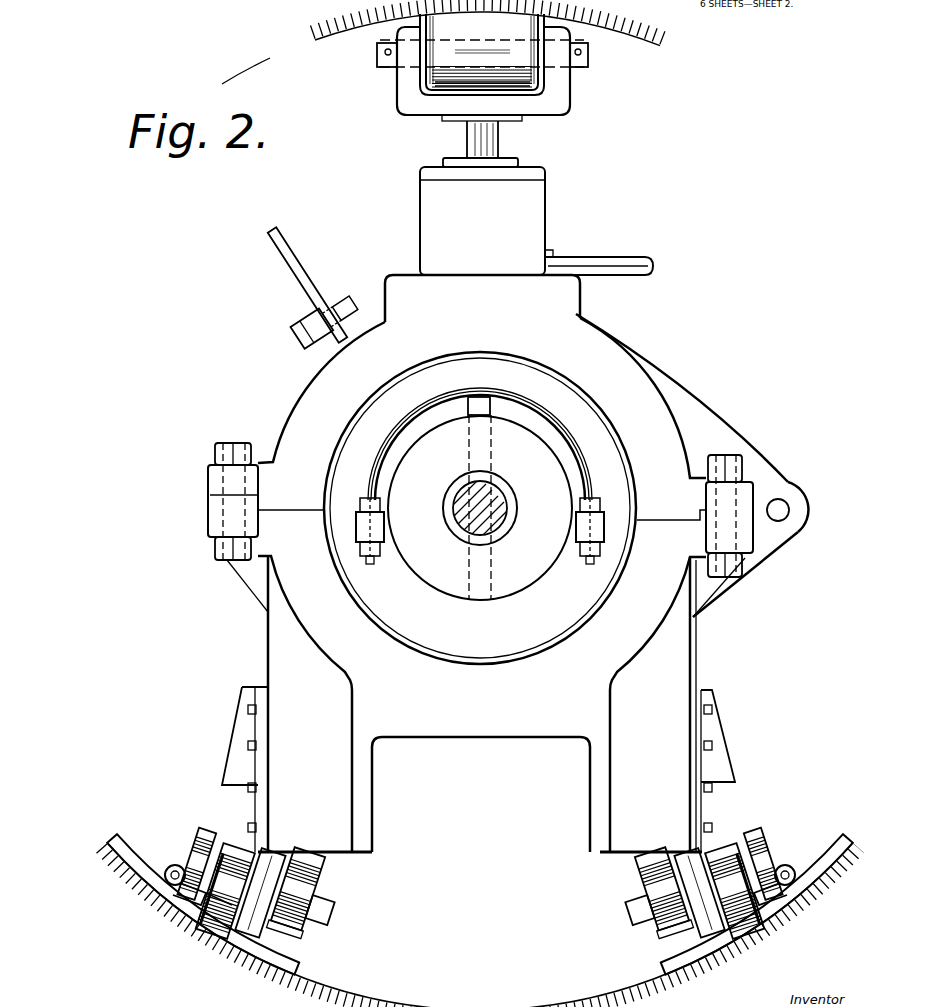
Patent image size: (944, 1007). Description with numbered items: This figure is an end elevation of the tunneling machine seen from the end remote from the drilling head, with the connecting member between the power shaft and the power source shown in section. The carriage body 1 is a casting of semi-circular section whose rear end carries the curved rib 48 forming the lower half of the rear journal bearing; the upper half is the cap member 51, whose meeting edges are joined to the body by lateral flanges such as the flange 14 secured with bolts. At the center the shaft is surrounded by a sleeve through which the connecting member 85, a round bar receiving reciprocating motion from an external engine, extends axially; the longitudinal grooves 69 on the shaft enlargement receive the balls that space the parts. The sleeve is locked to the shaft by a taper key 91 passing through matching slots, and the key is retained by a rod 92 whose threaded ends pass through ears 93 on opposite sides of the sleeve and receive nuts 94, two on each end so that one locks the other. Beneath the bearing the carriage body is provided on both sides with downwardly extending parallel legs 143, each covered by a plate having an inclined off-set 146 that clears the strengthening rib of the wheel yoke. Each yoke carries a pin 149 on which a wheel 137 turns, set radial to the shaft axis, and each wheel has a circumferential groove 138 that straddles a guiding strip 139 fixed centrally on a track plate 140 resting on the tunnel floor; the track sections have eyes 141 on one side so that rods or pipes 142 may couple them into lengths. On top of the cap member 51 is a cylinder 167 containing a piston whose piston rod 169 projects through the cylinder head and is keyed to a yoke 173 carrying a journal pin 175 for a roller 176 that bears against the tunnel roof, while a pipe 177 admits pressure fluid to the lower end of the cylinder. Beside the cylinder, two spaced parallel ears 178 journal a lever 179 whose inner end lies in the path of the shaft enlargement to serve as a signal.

The carriage body 1 is at (546, 716).
The lateral flange 14 is at (697, 738).
The rib 48 is at (326, 633).
The cap member 51 is at (300, 425).
The longitudinal groove 69 is at (480, 507).
The connecting member 85 is at (508, 497).
The taper key 91 is at (481, 403).
The rod 92 is at (440, 408).
The ears 93 is at (370, 527).
The nuts 94 is at (377, 560).
The wheel 137 is at (292, 869).
The circumferential groove 138 is at (230, 930).
The guiding strip 139 is at (330, 898).
The track plate 140 is at (298, 962).
The eyes 141 is at (172, 868).
The rods or pipes 142 is at (160, 897).
The leg 143 is at (268, 817).
The inclined off-set 146 is at (228, 775).
The pin 149 is at (215, 833).
The cylinder 167 is at (482, 221).
The piston rod 169 is at (497, 143).
The yoke 173 is at (553, 100).
The journal pin 175 is at (588, 64).
The roller 176 is at (421, 90).
The pipe 177 is at (602, 264).
The ears 178 is at (310, 304).
The lever 179 is at (298, 249).